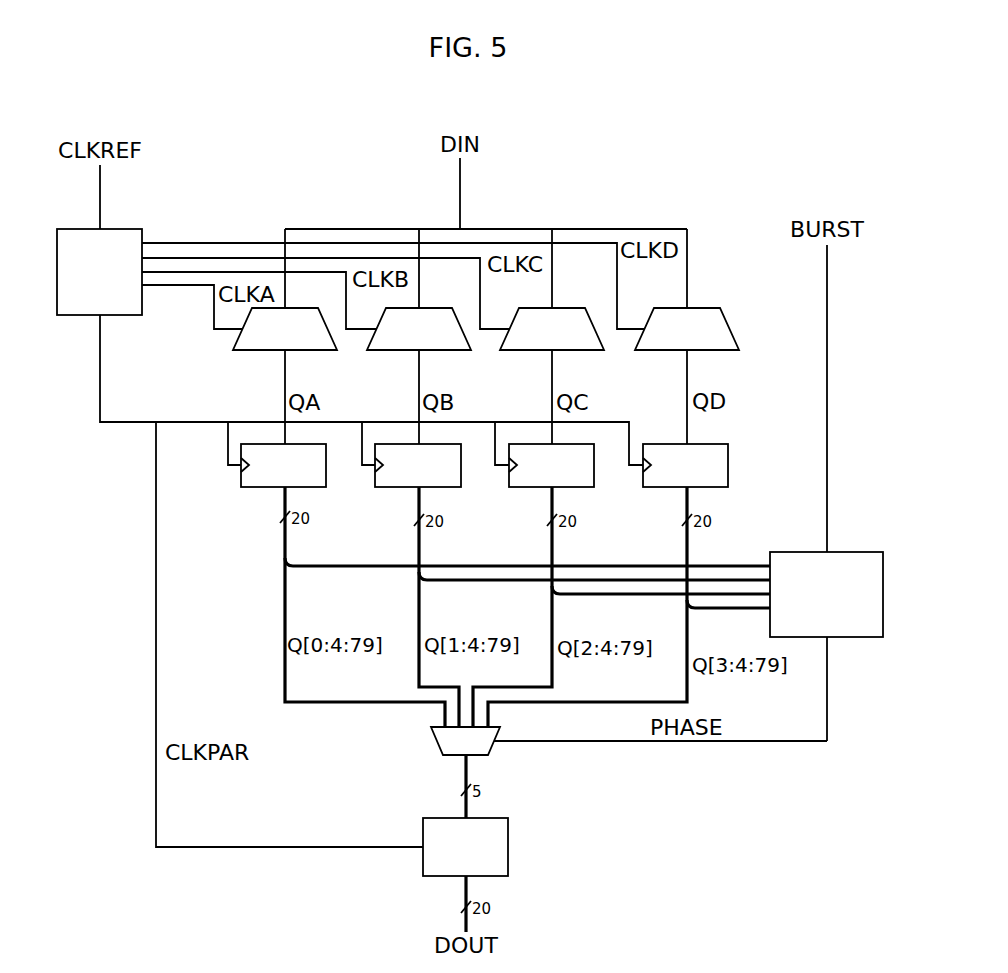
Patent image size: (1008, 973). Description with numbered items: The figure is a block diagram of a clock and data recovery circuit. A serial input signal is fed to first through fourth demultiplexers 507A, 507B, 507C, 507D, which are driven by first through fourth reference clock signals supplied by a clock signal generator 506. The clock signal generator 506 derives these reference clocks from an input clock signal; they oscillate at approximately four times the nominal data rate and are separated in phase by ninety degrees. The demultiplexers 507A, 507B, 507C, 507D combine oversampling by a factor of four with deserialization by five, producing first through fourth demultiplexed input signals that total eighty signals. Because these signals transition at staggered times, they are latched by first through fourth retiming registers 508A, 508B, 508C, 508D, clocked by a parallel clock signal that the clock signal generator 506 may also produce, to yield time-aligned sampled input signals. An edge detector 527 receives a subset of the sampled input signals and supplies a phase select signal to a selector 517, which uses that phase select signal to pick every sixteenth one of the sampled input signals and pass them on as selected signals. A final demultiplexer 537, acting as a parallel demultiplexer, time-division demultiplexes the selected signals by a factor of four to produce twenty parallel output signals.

The clock signal generator 506 is at (88, 316).
The first demultiplexer 507A is at (270, 350).
The second demultiplexer 507B is at (406, 350).
The third demultiplexer 507C is at (539, 350).
The fourth demultiplexer 507D is at (672, 350).
The first retiming register 508A is at (262, 488).
The second retiming register 508B is at (396, 488).
The third retiming register 508C is at (530, 488).
The fourth retiming register 508D is at (664, 488).
The selector 517 is at (440, 750).
The edge detector 527 is at (805, 552).
The final demultiplexer 537 is at (423, 876).